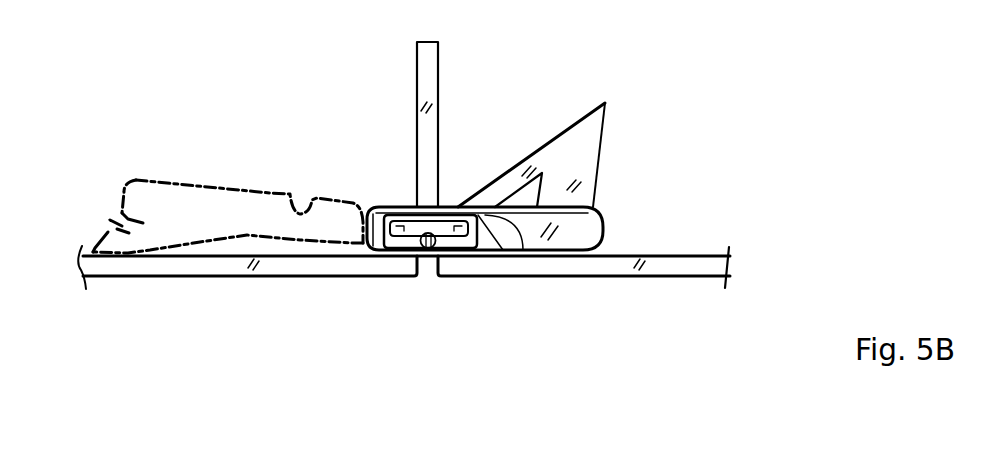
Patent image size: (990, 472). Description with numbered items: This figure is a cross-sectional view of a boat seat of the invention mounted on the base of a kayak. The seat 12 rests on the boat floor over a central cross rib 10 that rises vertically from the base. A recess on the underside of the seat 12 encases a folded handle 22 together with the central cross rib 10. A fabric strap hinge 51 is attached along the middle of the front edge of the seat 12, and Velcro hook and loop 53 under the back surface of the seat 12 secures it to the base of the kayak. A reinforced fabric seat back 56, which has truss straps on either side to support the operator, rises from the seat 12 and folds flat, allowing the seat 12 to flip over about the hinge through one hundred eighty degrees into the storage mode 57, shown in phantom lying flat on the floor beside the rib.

The central cross rib 10 is at (428, 163).
The seat 12 is at (597, 210).
The folded handle 22 is at (403, 236).
The fabric strap hinge 51 is at (371, 241).
The Velcro hook and loop 53 is at (531, 249).
The fabric seat back 56 is at (545, 172).
The storage mode 57 is at (270, 193).